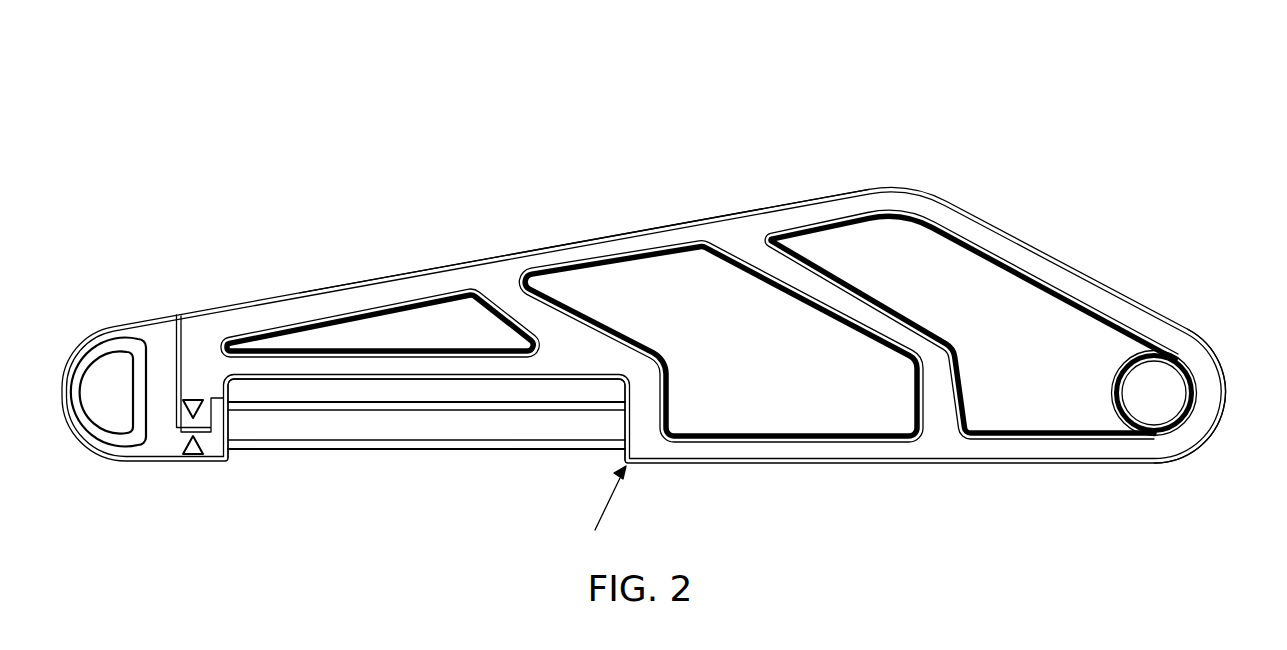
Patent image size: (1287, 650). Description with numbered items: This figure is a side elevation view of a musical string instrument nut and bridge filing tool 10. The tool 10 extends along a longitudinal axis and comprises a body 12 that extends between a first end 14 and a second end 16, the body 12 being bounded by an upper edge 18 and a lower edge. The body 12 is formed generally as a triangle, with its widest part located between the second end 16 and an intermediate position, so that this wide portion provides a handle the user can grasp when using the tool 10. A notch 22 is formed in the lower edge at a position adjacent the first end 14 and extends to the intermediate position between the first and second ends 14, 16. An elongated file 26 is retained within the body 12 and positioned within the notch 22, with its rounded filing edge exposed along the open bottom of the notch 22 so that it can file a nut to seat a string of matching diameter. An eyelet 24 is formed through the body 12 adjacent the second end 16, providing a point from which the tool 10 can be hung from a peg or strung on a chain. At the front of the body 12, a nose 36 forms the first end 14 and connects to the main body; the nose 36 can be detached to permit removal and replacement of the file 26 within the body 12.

The filing tool 10 is at (816, 103).
The body 12 is at (1085, 276).
The first end 14 is at (106, 333).
The second end 16 is at (1222, 396).
The upper edge 18 is at (572, 243).
The notch 22 is at (256, 474).
The eyelet 24 is at (1152, 403).
The elongated file 26 is at (396, 431).
The nose 36 is at (128, 447).